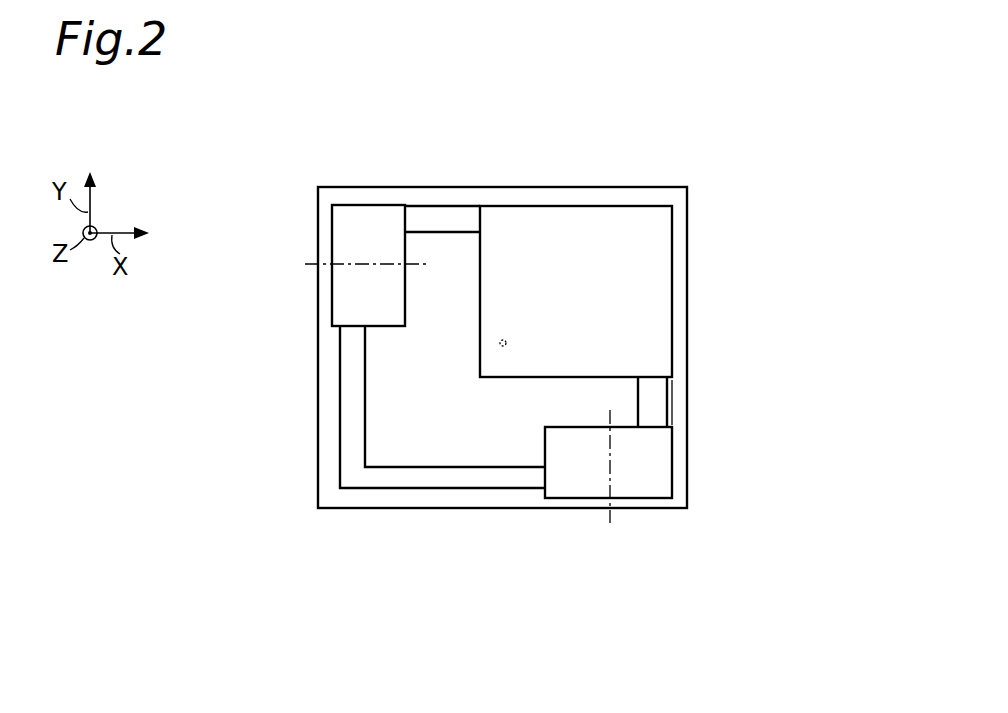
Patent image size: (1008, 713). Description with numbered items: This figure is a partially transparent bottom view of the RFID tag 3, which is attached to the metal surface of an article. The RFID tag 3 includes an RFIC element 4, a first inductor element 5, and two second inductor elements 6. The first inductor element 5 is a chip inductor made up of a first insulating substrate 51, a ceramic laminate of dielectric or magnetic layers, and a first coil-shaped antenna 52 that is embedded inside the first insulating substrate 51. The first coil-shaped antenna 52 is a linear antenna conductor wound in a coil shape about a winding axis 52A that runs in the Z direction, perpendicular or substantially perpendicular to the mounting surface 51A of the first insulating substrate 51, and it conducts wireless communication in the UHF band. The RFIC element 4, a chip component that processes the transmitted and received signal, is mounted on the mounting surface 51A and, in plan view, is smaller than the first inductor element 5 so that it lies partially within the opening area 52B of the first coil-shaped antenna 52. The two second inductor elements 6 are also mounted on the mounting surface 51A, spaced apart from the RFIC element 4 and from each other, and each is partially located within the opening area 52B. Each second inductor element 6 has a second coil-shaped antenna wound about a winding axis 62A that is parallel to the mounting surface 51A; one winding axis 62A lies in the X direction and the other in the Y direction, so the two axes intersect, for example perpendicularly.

The RFID tag 3 is at (733, 232).
The RFIC element 4 is at (629, 222).
The first inductor element 5 is at (541, 195).
The second inductor element 6 is at (368, 222).
The first insulating substrate 51 is at (444, 195).
The mounting surface 51A is at (678, 391).
The first coil-shaped antenna 52 is at (455, 222).
The winding axis 52A is at (506, 341).
The opening area 52B is at (383, 388).
The winding axis 62A is at (312, 265).